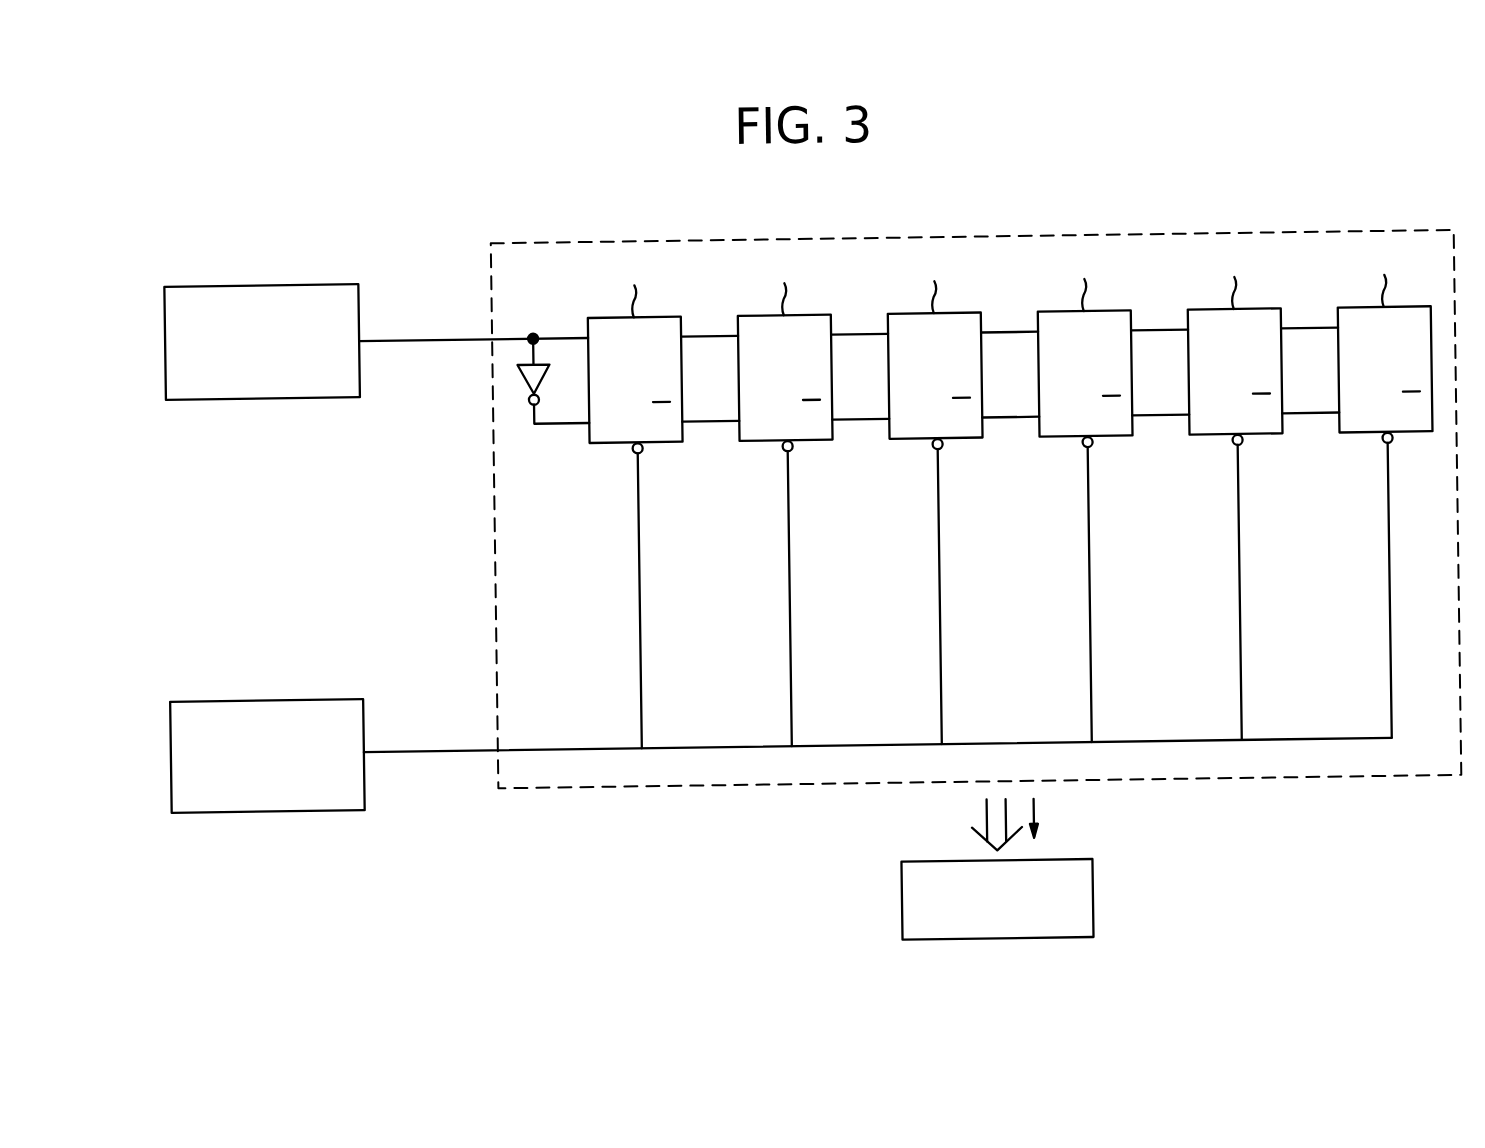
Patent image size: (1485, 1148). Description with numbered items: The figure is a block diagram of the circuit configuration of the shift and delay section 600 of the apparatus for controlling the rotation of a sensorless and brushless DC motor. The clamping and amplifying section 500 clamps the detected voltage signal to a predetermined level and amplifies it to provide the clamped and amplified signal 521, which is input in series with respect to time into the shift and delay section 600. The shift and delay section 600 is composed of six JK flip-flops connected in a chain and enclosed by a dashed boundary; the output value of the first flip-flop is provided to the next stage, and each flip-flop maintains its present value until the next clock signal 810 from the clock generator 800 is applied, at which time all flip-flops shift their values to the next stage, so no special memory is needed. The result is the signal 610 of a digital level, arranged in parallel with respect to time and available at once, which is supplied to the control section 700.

The clamping and amplifying section 500 is at (262, 394).
The clamped and amplified signal 521 is at (432, 320).
The shift and delay section 600 is at (492, 515).
The signal of a digital level 610 is at (1034, 824).
The control section 700 is at (1085, 899).
The clock generator 800 is at (263, 696).
The clock signal 810 is at (432, 735).